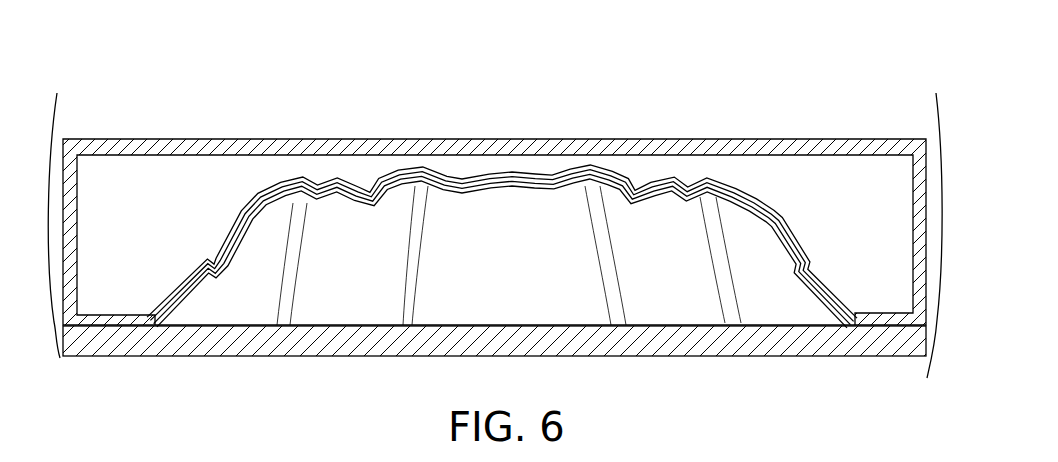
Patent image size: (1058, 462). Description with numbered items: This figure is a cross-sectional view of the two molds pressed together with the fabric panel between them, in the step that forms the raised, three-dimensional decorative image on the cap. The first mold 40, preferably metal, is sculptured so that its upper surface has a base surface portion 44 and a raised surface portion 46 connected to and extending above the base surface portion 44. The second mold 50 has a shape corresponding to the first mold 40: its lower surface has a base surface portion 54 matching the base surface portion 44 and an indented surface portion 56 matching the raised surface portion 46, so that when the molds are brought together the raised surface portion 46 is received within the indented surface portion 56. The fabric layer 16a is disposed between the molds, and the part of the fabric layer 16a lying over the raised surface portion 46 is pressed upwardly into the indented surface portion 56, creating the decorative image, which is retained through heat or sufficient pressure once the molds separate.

The fabric layer 16a is at (502, 224).
The first mold 40 is at (757, 300).
The base surface portion 44 is at (212, 290).
The raised surface portion 46 is at (397, 192).
The second mold 50 is at (862, 182).
The base surface portion 54 is at (182, 276).
The indented surface portion 56 is at (492, 233).